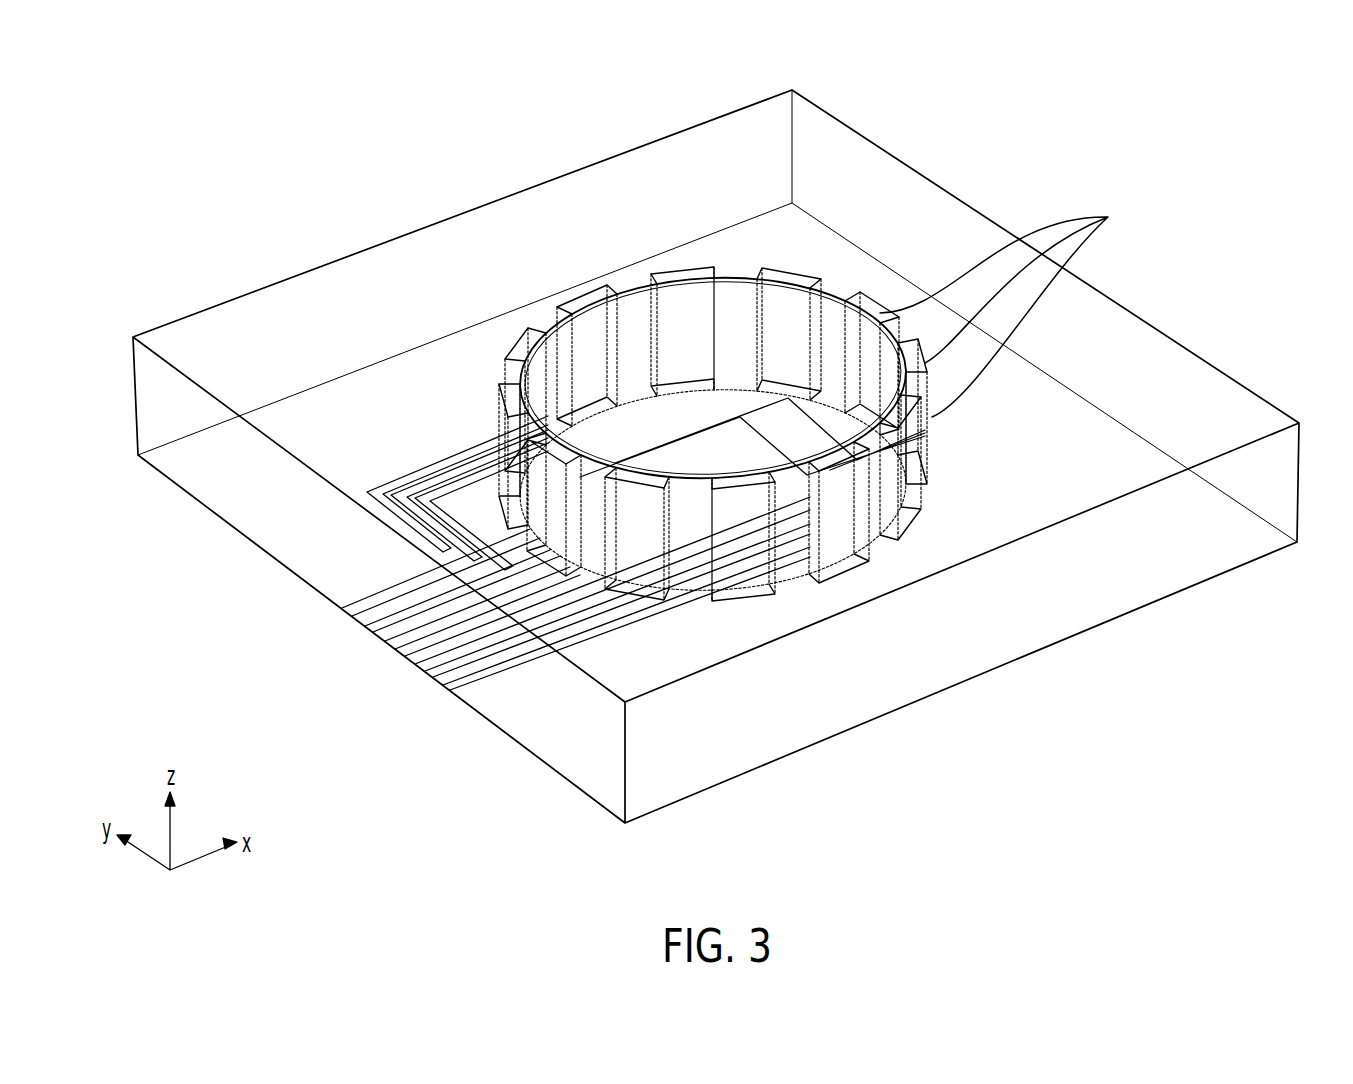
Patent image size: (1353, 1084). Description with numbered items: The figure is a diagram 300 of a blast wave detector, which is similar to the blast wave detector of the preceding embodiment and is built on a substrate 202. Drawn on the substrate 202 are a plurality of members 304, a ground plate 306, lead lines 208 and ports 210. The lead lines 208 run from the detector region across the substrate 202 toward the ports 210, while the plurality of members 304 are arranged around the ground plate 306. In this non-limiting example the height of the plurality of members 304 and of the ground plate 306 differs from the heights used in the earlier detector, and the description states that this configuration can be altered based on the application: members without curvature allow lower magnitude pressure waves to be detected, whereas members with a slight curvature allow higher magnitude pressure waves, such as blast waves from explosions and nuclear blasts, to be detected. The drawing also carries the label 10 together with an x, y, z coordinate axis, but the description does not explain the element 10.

The diagram 300 is at (335, 122).
The photonic chip 10 is at (716, 456).
The substrate 202 is at (240, 323).
The lead lines 208 is at (410, 473).
The ports 210 is at (367, 643).
The plurality of members 304 is at (1011, 308).
The ground plate 306 is at (627, 347).